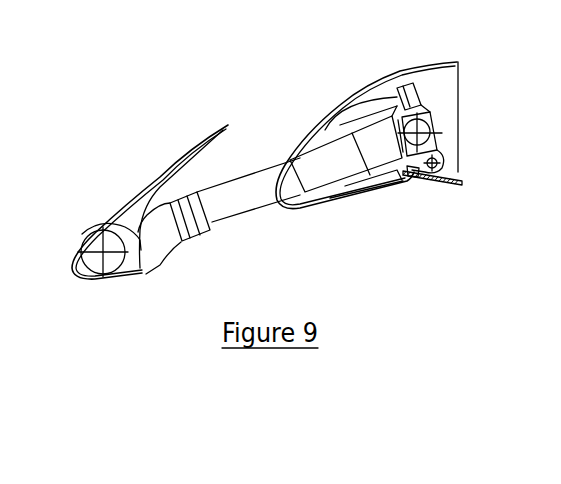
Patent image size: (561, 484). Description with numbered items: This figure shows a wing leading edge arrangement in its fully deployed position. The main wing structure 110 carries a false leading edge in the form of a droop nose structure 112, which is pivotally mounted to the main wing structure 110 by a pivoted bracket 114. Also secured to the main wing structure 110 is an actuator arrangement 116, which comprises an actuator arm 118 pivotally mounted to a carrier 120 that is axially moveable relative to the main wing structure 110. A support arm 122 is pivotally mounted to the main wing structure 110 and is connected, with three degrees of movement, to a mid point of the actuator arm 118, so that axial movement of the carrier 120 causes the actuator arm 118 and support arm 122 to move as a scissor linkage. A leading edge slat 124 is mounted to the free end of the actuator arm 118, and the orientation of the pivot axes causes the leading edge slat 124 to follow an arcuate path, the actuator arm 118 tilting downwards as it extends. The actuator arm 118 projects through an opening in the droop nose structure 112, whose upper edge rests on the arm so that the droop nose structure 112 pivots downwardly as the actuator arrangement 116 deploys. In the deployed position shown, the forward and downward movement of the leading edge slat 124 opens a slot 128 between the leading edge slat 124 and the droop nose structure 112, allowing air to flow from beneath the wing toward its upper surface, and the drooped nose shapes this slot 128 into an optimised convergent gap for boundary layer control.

The main wing structure 110 is at (448, 187).
The droop nose structure 112 is at (337, 207).
The pivoted bracket 114 is at (415, 178).
The actuator arrangement 116 is at (270, 225).
The actuator arm 118 is at (346, 155).
The carrier 120 is at (430, 130).
The support arm 122 is at (406, 88).
The leading edge slat 124 is at (133, 276).
The slot 128 is at (257, 133).